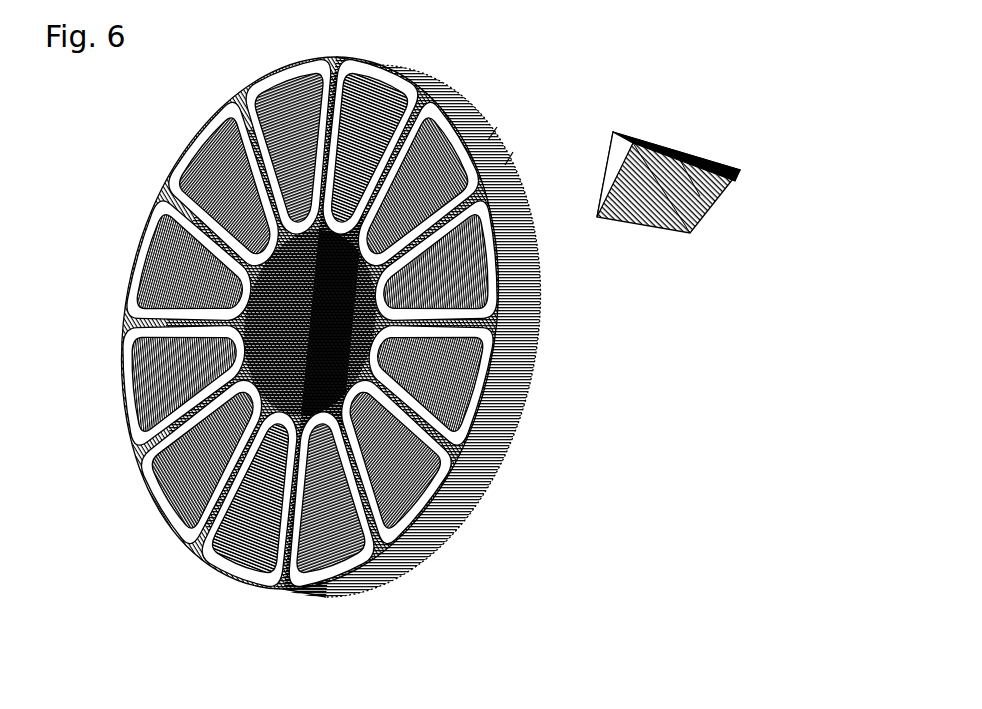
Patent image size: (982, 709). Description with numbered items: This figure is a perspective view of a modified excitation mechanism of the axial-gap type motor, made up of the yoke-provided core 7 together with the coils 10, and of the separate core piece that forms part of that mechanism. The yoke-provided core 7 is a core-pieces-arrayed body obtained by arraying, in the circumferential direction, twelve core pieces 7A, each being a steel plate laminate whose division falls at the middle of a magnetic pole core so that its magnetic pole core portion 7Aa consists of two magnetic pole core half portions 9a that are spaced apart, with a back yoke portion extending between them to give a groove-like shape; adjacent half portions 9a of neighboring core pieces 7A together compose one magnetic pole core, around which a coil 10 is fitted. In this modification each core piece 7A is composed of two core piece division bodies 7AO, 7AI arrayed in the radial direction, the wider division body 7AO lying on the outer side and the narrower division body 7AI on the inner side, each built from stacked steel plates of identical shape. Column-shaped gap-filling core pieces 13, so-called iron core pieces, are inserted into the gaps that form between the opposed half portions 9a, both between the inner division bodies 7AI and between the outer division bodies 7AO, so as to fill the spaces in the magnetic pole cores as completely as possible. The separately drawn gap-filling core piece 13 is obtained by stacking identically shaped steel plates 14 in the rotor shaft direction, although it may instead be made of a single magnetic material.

The yoke-provided core 7 is at (132, 332).
The core piece 7A is at (263, 91).
The core piece division body 7AI is at (497, 127).
The core piece division body 7AO is at (513, 152).
The magnetic pole core portion 7Aa is at (162, 550).
The magnetic pole core half portion 9a is at (530, 210).
The coil 10 is at (283, 78).
The gap-filling core piece 13 is at (595, 208).
The steel plate 14 is at (713, 215).